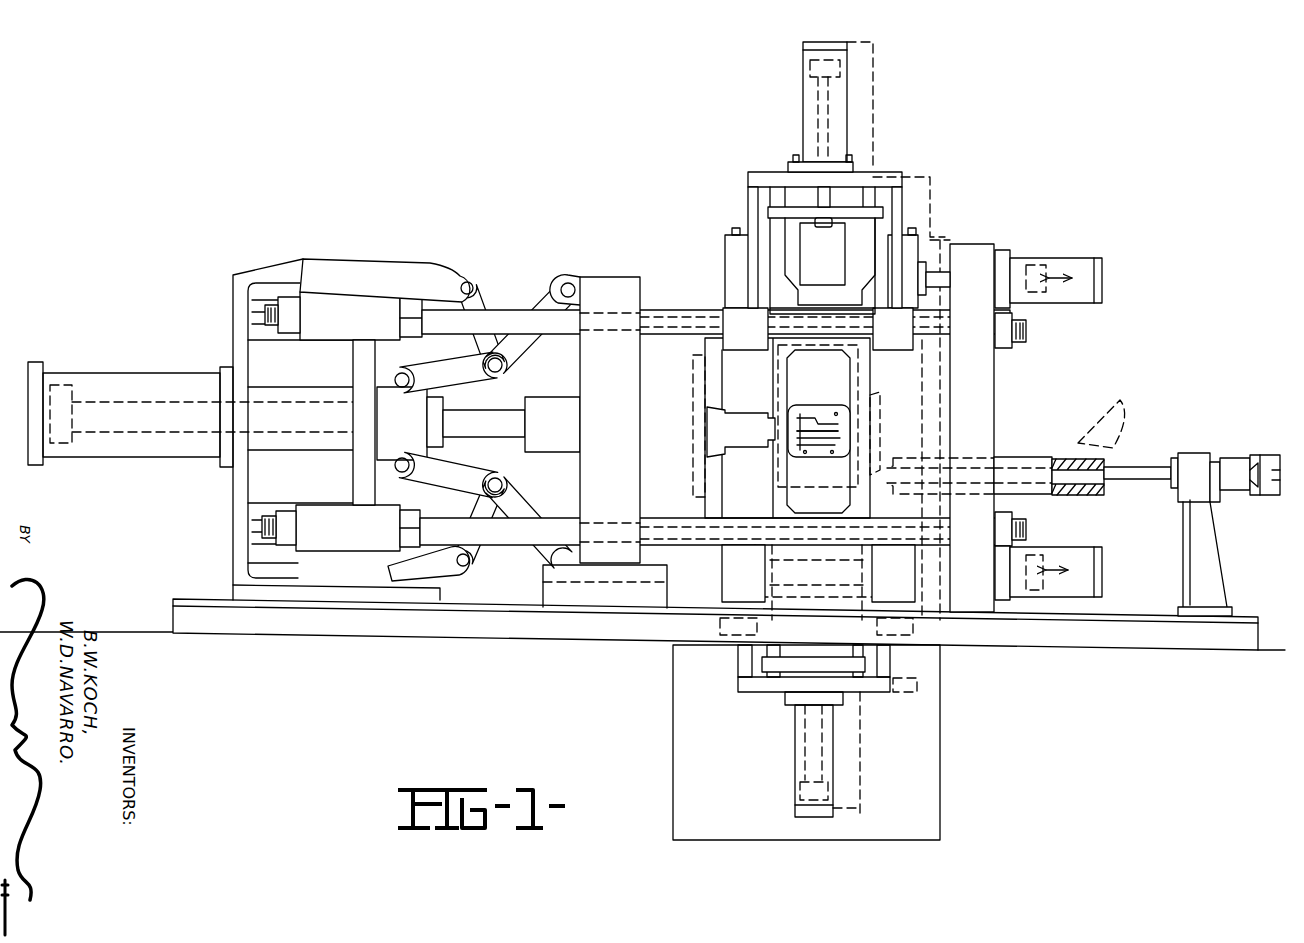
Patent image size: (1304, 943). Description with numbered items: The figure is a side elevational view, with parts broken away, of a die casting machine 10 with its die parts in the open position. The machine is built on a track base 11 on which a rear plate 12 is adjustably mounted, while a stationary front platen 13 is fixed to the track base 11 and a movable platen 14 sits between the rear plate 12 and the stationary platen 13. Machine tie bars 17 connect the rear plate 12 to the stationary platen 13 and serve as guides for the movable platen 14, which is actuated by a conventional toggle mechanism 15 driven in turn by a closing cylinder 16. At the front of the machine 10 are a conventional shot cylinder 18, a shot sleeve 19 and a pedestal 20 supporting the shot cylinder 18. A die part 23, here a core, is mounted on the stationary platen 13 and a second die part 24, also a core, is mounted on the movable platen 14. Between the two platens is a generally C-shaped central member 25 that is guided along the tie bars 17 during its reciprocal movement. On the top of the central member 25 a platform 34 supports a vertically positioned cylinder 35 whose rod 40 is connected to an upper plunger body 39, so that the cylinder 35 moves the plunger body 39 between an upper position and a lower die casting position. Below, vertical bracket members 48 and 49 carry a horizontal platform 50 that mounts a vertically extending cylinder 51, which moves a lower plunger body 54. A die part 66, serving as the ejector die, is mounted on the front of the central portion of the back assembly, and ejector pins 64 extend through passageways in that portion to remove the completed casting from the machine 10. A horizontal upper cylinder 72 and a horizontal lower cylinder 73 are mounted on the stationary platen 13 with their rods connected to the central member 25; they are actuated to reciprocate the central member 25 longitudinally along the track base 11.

The die casting machine 10 is at (1103, 233).
The track base 11 is at (198, 599).
The rear plate 12 is at (233, 300).
The stationary front platen 13 is at (994, 365).
The movable platen 14 is at (648, 278).
The toggle mechanism 15 is at (521, 369).
The closing cylinder 16 is at (145, 378).
The machine tie bars 17 is at (506, 308).
The shot cylinder 18 is at (1245, 434).
The shot sleeve 19 is at (1046, 432).
The pedestal 20 is at (1210, 521).
The die part 23 is at (873, 410).
The die part 24 is at (752, 416).
The central member 25 is at (718, 257).
The platform 34 is at (900, 181).
The cylinder 35 is at (803, 98).
The upper plunger body 39 is at (860, 256).
The rod 40 is at (812, 203).
The vertical bracket member 48 is at (738, 672).
The vertical bracket member 49 is at (892, 668).
The horizontal platform 50 is at (880, 698).
The cylinder 51 is at (795, 803).
The lower plunger body 54 is at (787, 676).
The ejector pins 64 is at (850, 412).
The die part 66 is at (800, 470).
The horizontal upper cylinder 72 is at (1078, 258).
The horizontal lower cylinder 73 is at (1072, 547).